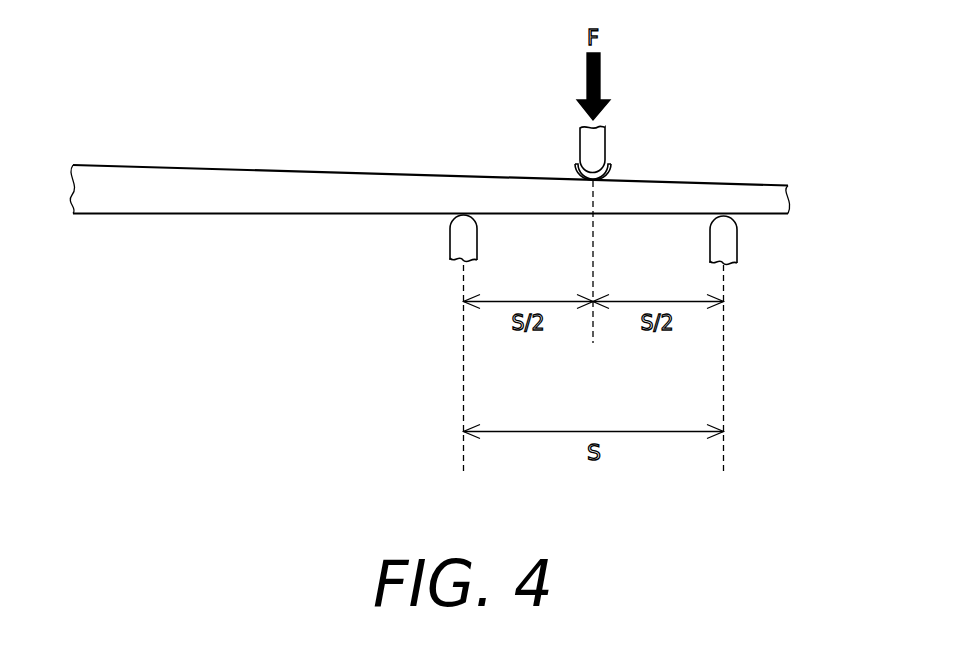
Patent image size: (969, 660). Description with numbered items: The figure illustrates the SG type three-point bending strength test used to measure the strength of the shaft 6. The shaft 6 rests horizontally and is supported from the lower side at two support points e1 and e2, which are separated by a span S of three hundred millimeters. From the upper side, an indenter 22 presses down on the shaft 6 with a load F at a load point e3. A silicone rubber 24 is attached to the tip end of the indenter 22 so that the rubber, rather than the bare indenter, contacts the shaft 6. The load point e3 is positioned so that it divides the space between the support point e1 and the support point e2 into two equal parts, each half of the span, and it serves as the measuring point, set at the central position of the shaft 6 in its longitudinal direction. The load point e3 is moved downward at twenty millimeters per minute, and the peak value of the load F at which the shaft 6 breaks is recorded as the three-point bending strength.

The shaft 6 is at (243, 167).
The indenter 22 is at (600, 145).
The silicone rubber 24 is at (575, 167).
The support point e1 is at (463, 213).
The support point e2 is at (723, 213).
The load point e3 is at (594, 182).